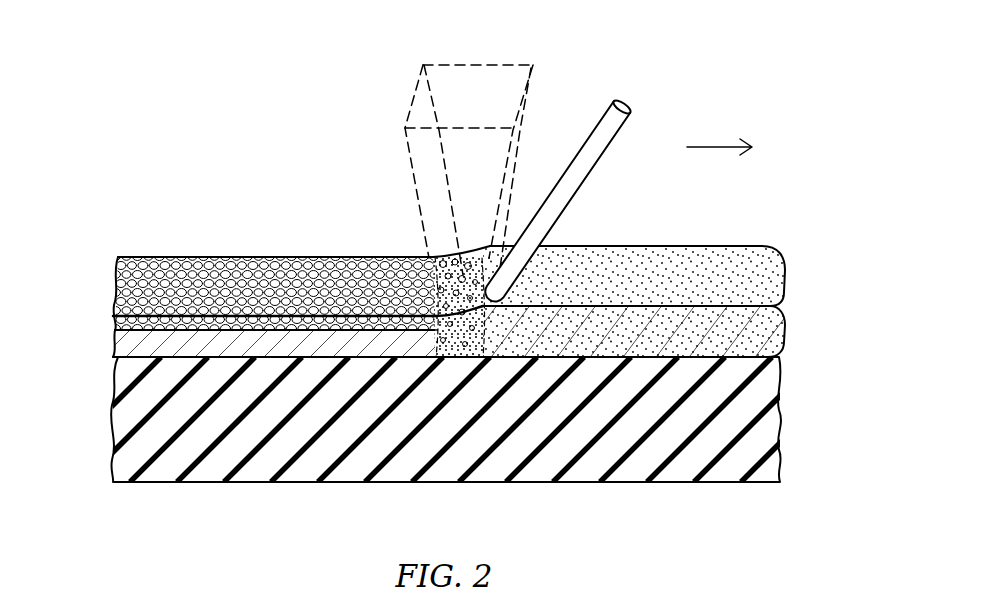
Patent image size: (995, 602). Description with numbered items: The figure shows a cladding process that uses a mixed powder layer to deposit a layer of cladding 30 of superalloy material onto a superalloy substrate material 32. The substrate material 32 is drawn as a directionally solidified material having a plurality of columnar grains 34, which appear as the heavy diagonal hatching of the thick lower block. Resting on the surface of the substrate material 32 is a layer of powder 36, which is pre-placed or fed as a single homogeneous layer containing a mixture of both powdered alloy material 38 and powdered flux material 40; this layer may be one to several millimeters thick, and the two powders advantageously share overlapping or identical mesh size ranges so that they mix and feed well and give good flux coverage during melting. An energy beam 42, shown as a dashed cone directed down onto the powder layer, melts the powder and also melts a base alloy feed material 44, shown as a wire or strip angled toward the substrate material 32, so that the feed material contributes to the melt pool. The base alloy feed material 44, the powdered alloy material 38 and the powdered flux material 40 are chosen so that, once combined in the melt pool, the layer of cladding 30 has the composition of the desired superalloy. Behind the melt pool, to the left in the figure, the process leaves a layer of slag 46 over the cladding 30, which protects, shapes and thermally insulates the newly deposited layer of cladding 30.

The layer of cladding 30 is at (127, 342).
The superalloy substrate material 32 is at (451, 442).
The columnar grains 34 is at (320, 483).
The layer of powder 36 is at (777, 289).
The powdered alloy material 38 is at (617, 277).
The powdered flux material 40 is at (634, 331).
The energy beam 42 is at (490, 64).
The base alloy feed material 44 is at (592, 167).
The layer of slag 46 is at (137, 290).